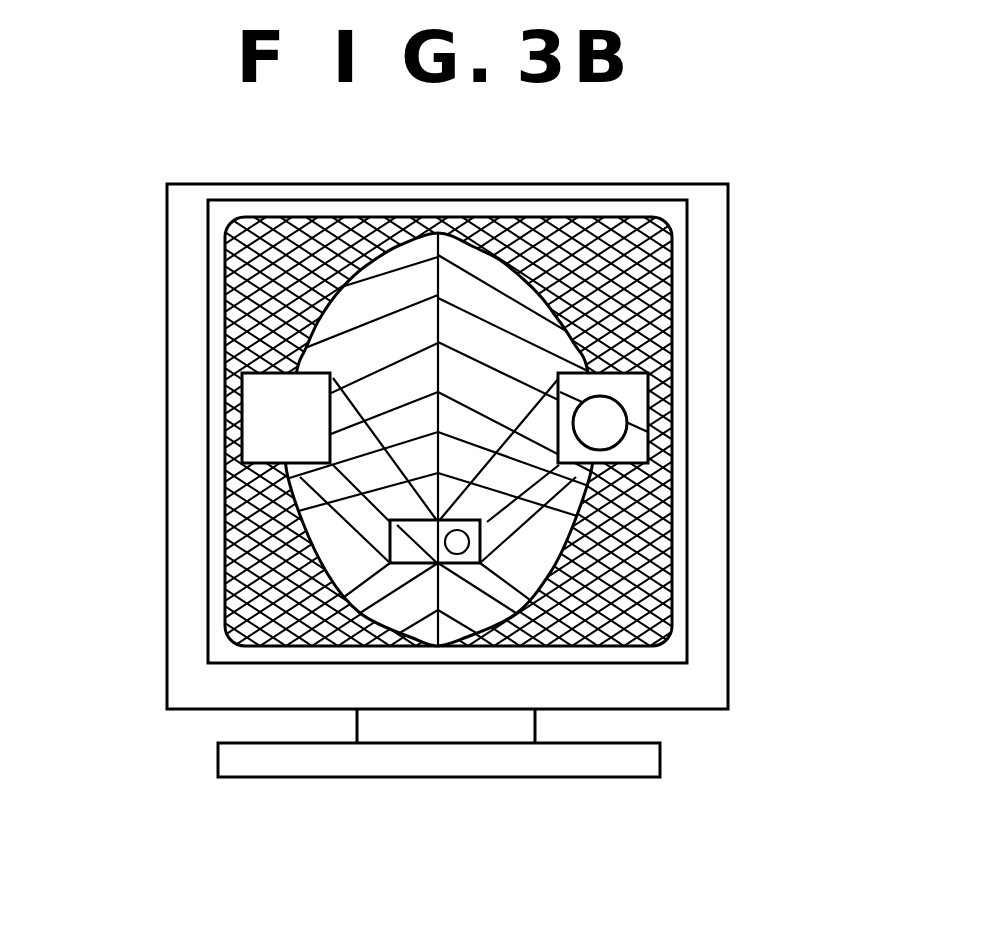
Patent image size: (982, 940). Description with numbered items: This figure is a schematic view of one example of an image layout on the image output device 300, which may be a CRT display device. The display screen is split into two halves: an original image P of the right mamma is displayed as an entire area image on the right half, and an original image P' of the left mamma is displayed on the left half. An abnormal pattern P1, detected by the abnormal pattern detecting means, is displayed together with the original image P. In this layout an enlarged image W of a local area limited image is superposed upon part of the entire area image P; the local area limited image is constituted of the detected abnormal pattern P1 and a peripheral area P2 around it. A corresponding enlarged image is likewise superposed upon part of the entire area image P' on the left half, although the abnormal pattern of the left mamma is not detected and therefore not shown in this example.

The image output device 300 is at (708, 172).
The original image P is at (448, 383).
The original image P' is at (288, 240).
The enlarged image W is at (285, 325).
The abnormal pattern P1 is at (612, 420).
The peripheral area P2 is at (760, 653).